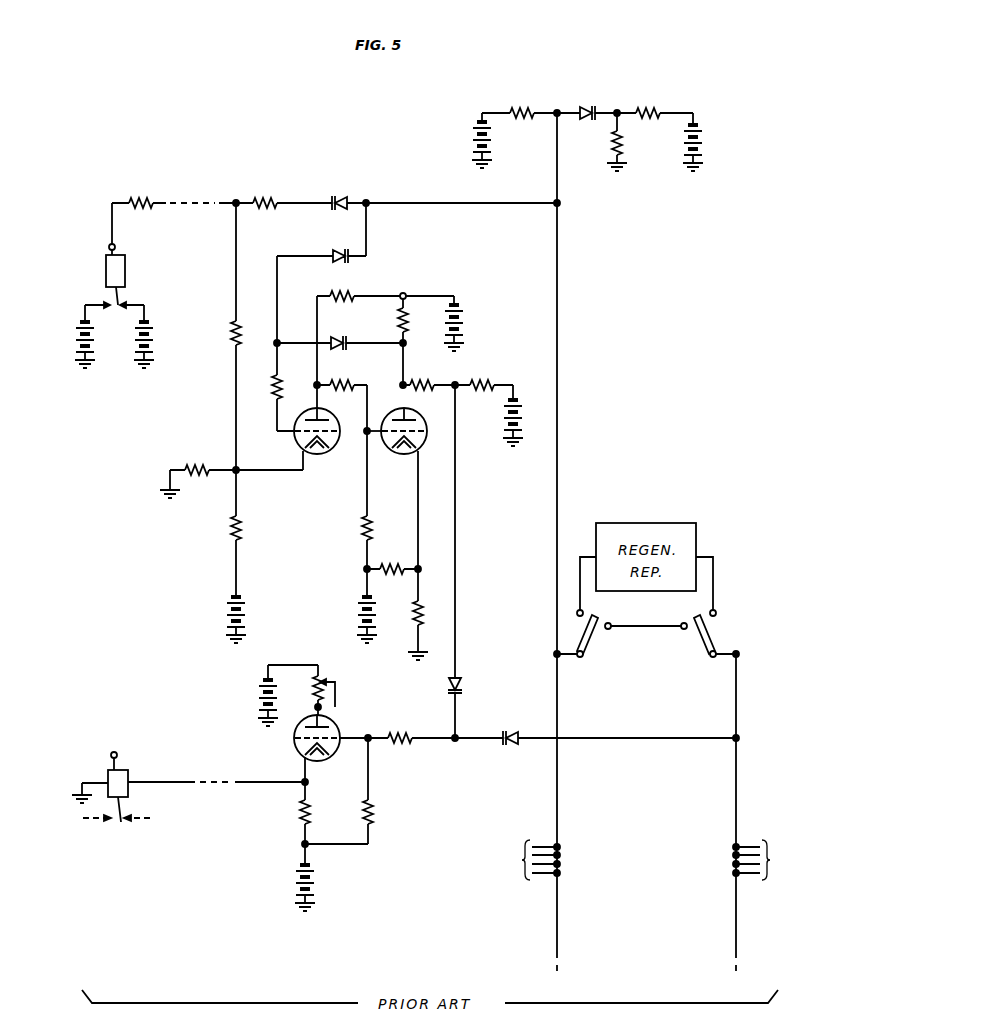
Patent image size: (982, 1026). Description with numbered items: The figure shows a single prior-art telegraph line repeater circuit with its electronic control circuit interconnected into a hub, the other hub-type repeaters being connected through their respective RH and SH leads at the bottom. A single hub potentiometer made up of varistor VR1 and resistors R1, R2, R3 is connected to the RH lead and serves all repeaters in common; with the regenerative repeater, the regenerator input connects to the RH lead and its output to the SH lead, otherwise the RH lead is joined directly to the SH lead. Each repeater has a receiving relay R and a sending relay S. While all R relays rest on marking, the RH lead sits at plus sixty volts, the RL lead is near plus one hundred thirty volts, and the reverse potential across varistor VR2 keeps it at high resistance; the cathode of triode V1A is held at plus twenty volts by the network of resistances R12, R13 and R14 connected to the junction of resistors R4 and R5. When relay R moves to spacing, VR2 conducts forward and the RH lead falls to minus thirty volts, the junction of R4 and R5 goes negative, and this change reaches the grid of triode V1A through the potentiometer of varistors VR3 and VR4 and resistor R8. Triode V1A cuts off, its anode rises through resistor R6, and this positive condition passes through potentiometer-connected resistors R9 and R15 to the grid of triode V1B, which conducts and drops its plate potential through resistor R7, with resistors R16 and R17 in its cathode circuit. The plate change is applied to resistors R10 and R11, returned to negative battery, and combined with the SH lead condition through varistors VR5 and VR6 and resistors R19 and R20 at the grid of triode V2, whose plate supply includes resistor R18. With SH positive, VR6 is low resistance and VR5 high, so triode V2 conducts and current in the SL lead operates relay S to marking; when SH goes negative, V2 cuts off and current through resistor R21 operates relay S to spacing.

The resistor R1 is at (522, 104).
The varistor VR1 is at (585, 105).
The resistor R2 is at (648, 103).
The resistor R3 is at (630, 143).
The resistor R4 is at (141, 193).
The RL lead RL is at (192, 191).
The resistor R5 is at (265, 193).
The varistor VR2 is at (337, 194).
The receiving relay R is at (115, 265).
The resistance R12 is at (218, 333).
The resistance R13 is at (196, 460).
The resistance R14 is at (253, 528).
The varistor VR3 is at (336, 248).
The varistor VR4 is at (336, 335).
The resistor R8 is at (263, 387).
The resistor R6 is at (342, 287).
The resistor R7 is at (413, 320).
The resistor R9 is at (342, 376).
The resistor R10 is at (421, 376).
The resistor R11 is at (485, 376).
The triode V1A is at (323, 439).
The triode V1B is at (409, 434).
The resistor R15 is at (350, 528).
The resistor R16 is at (392, 560).
The resistor R17 is at (433, 609).
The varistor VR5 is at (471, 685).
The resistor R18 is at (334, 678).
The triode V2 is at (304, 738).
The resistor R19 is at (402, 729).
The varistor VR6 is at (511, 730).
The SL lead SL is at (216, 771).
The resistor R21 is at (287, 812).
The resistor R20 is at (385, 812).
The sending relay S is at (118, 774).
The RH lead RH is at (521, 905).
The SH lead SH is at (792, 905).